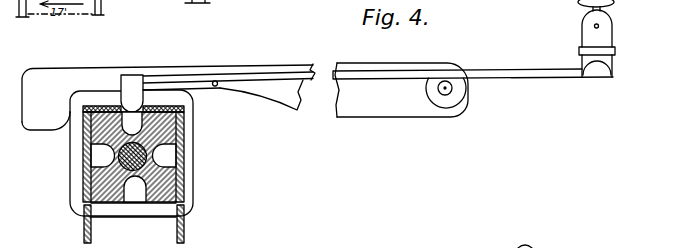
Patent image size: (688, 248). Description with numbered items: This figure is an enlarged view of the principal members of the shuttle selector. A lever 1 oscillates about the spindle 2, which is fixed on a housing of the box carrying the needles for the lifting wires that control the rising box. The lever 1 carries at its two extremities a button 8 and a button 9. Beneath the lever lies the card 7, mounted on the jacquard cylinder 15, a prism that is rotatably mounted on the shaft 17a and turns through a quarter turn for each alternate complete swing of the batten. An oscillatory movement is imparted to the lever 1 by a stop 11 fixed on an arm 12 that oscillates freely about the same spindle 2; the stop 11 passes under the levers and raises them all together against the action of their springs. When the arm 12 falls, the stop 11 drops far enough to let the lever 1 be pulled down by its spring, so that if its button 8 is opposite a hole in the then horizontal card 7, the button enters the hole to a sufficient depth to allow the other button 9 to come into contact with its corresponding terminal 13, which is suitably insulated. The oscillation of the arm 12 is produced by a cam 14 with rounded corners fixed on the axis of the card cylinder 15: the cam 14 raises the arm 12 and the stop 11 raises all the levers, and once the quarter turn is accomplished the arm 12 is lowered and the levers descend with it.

The lever 1 is at (237, 77).
The spindle 2 is at (440, 92).
The card 7 is at (88, 147).
The button 8 is at (132, 93).
The button 9 is at (595, 68).
The stop 11 is at (220, 87).
The arm 12 is at (245, 139).
The terminal 13 is at (596, 38).
The cam 14 is at (119, 212).
The jacquard cylinder 15 is at (172, 126).
The shaft 17a is at (152, 156).